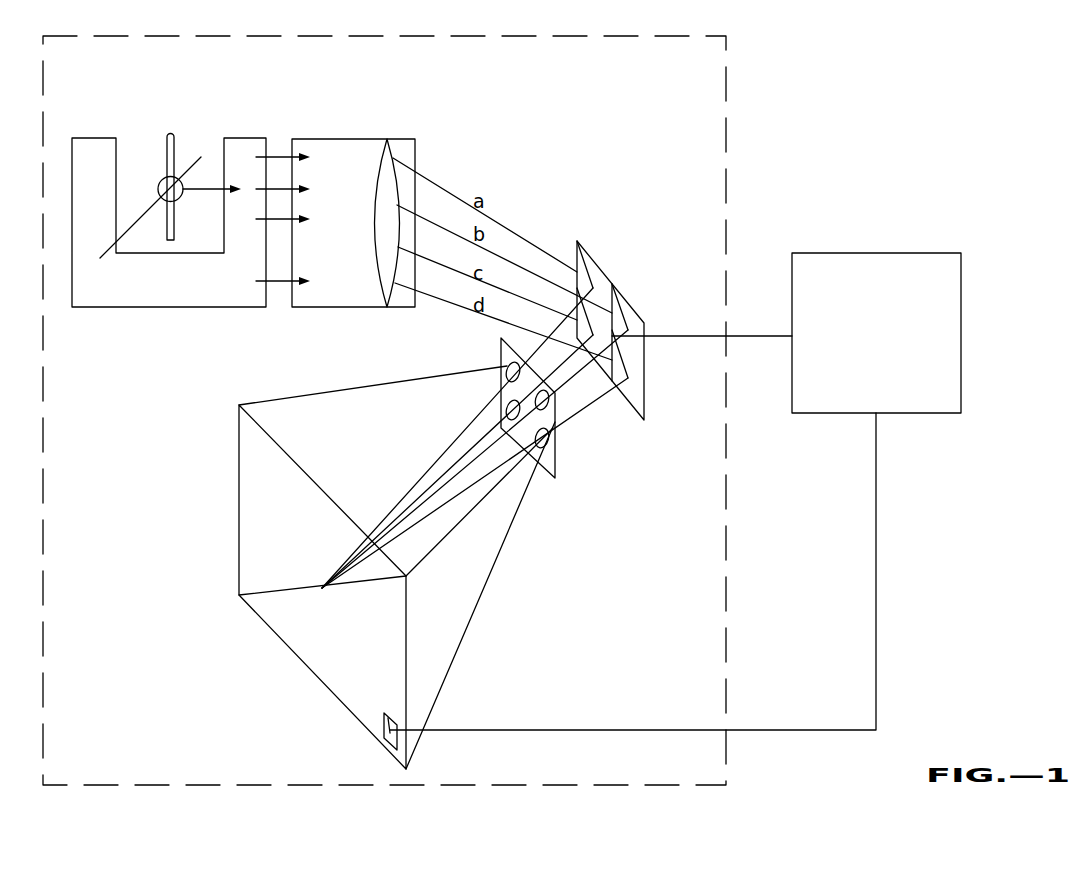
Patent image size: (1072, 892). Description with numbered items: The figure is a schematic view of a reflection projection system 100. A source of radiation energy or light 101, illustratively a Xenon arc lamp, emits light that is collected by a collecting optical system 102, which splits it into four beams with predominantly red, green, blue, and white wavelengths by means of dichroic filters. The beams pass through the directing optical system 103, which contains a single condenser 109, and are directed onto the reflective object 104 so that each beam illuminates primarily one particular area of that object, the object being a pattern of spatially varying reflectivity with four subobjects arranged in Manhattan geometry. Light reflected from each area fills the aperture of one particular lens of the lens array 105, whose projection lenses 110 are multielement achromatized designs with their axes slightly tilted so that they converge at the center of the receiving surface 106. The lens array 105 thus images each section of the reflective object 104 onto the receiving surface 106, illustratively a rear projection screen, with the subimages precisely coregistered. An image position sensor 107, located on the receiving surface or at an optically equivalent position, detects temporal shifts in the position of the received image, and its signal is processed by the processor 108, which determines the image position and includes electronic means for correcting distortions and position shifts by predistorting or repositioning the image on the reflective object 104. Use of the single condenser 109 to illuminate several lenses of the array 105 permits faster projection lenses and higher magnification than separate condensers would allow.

The projection system 100 is at (728, 47).
The source of radiation energy or light 101 is at (170, 136).
The collecting optical system 102 is at (250, 138).
The directing optical system 103 is at (358, 147).
The reflective object 104 is at (622, 287).
The lens array 105 is at (552, 463).
The receiving surface 106 is at (392, 621).
The image position sensor 107 is at (387, 727).
The processor 108 is at (894, 263).
The condenser 109 is at (392, 148).
The projection lenses 110 is at (552, 402).